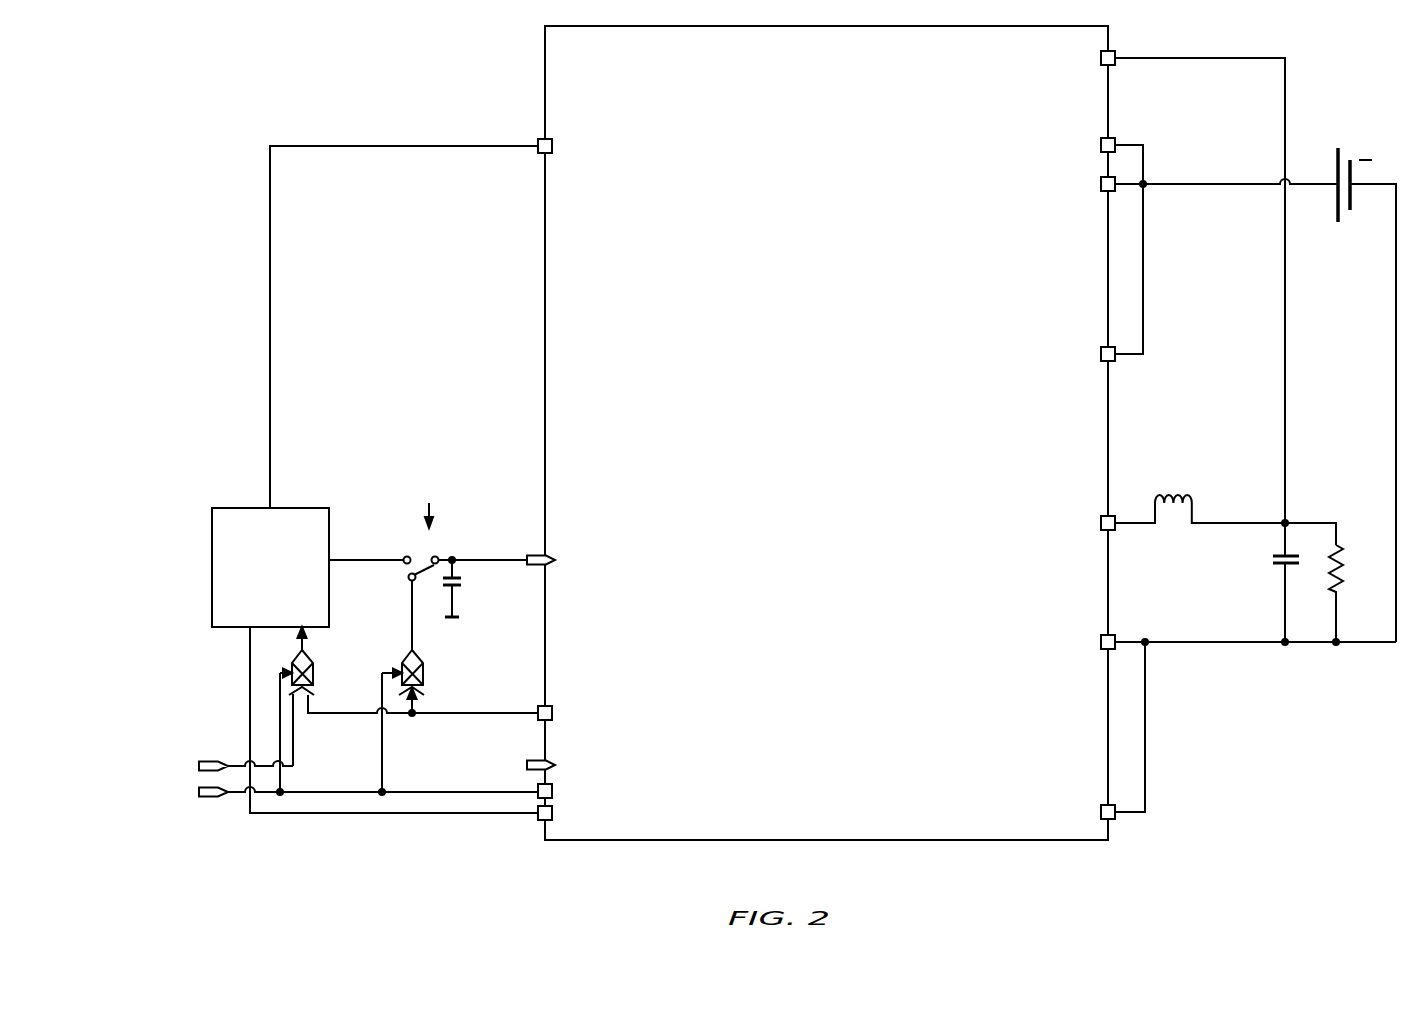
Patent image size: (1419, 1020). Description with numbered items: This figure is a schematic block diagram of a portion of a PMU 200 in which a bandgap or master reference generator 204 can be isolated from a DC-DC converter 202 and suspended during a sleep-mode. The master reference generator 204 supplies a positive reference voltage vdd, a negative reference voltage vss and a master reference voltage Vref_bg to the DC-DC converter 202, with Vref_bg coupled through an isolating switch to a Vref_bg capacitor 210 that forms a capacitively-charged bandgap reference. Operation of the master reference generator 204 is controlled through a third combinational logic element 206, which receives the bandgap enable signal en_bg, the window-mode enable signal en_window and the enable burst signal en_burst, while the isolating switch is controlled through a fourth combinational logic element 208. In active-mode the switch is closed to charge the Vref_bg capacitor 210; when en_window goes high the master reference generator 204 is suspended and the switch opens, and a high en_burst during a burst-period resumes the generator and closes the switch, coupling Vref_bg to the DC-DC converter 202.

The PMU 200 is at (306, 40).
The DC-DC converter 202 is at (971, 442).
The master reference generator 204 is at (286, 606).
The third combinational logic element 206 is at (314, 664).
The fourth combinational logic element 208 is at (424, 664).
The Vref_bg capacitor 210 is at (462, 583).